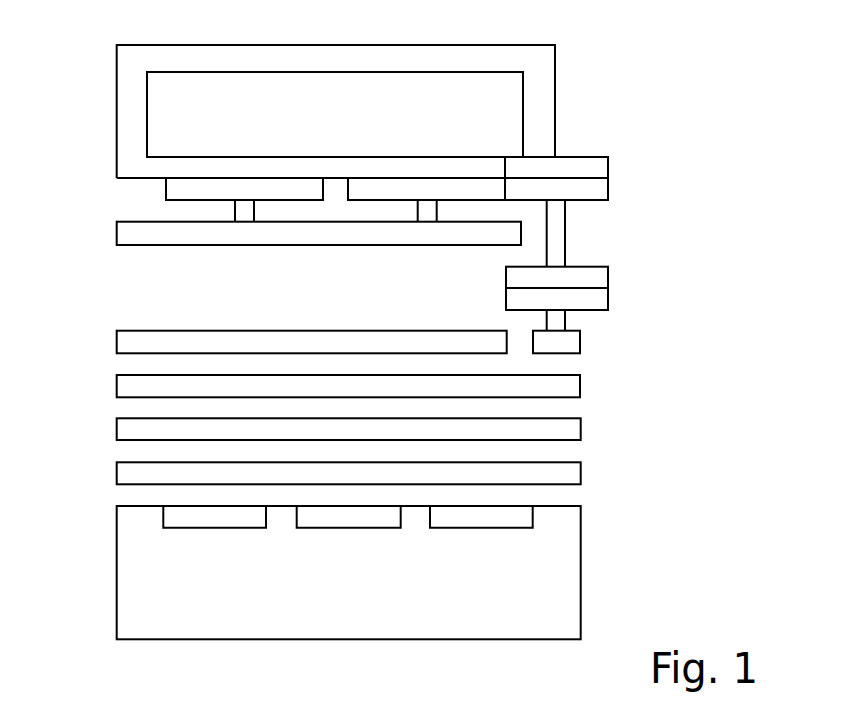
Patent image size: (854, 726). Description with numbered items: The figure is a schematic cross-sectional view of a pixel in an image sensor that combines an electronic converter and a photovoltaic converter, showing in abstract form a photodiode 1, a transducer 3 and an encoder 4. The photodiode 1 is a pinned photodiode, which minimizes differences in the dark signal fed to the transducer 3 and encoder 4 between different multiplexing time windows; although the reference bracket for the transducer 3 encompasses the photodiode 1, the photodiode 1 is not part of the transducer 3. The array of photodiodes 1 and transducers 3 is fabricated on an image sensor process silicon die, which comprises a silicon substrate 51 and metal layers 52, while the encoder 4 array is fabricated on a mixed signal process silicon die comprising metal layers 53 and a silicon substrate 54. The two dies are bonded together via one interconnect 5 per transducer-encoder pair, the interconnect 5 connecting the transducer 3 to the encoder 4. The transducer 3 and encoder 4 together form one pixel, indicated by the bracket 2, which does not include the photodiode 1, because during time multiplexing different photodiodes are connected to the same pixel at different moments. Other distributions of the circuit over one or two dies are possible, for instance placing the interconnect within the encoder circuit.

The photodiode 1 is at (498, 87).
The layer stack 2 is at (695, 135).
The transducer 3 is at (608, 45).
The encoder 4 is at (608, 288).
The interconnect 5 is at (558, 288).
The silicon substrate 51 is at (117, 45).
The metal layers 52 is at (117, 178).
The metal layers 53 is at (117, 288).
The silicon substrate 54 is at (117, 505).